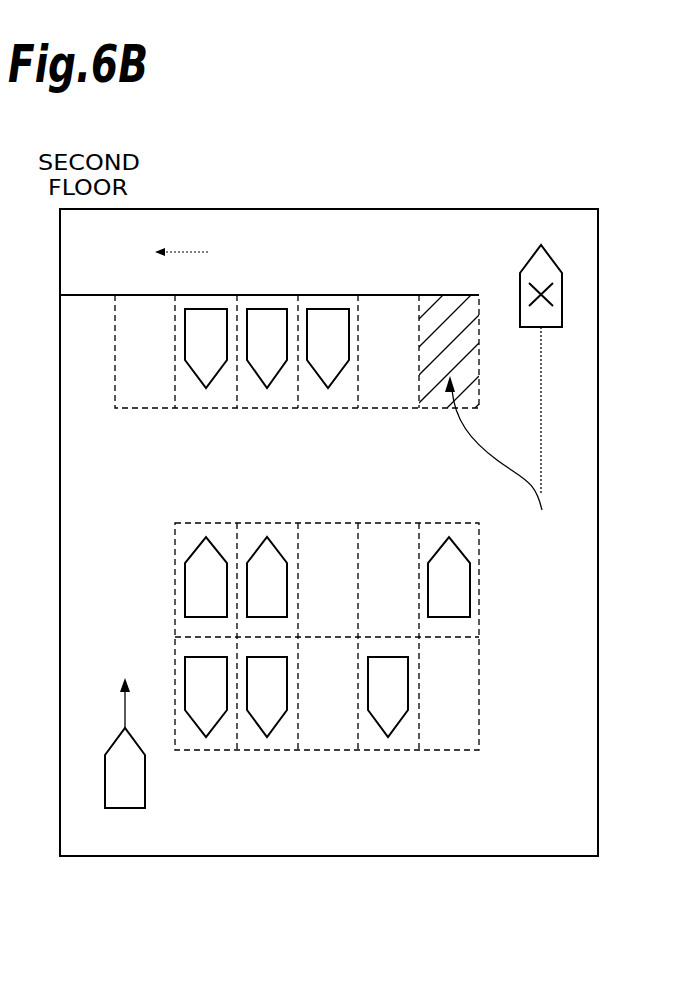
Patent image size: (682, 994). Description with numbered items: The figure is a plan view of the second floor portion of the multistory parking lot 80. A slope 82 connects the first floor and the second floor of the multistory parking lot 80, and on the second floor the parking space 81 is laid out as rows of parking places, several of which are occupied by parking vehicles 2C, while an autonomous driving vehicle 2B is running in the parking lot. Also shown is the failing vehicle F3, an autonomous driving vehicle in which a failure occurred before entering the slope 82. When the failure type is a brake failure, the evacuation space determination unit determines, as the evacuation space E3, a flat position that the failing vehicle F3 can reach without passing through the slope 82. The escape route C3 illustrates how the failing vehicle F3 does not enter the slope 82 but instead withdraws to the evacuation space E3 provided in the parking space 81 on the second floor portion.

The multistory parking lot 80 is at (237, 209).
The parking space 81 is at (115, 345).
The slope 82 is at (430, 222).
The autonomous driving vehicle parking in the parking space 2C is at (345, 343).
The autonomous driving vehicle running in the parking lot 2B is at (105, 797).
The evacuation space E3 is at (452, 318).
The failing vehicle F3 is at (563, 292).
The escape route C3 is at (542, 403).